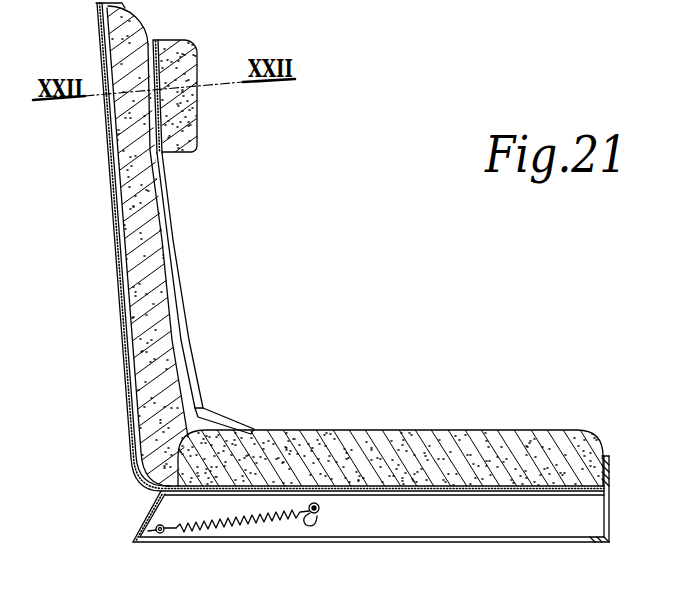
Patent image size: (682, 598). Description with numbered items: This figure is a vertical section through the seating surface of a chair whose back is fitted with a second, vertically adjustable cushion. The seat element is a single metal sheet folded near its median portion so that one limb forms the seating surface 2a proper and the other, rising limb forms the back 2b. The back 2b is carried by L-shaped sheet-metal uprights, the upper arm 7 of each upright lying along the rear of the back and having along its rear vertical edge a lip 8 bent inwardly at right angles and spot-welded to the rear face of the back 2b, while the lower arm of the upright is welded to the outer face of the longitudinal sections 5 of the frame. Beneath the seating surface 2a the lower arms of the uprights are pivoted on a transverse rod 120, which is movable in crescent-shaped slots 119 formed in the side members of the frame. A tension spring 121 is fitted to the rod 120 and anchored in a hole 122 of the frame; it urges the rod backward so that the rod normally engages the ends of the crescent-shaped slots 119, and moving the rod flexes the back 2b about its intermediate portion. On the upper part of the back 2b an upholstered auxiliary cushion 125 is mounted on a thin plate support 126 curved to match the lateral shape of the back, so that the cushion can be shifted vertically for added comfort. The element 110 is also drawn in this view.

The seating surface 2a is at (250, 490).
The back 2b is at (120, 227).
The longitudinal sections 5 is at (263, 530).
The upper arm 7 is at (182, 368).
The lip 8 is at (118, 290).
The cushion cover edge 110 is at (147, 197).
The crescent-shaped slots 119 is at (315, 526).
The transverse rod 120 is at (323, 508).
The tension spring 121 is at (215, 523).
The hole 122 is at (158, 536).
The auxiliary cushion 125 is at (182, 120).
The thin plate support 126 is at (158, 88).